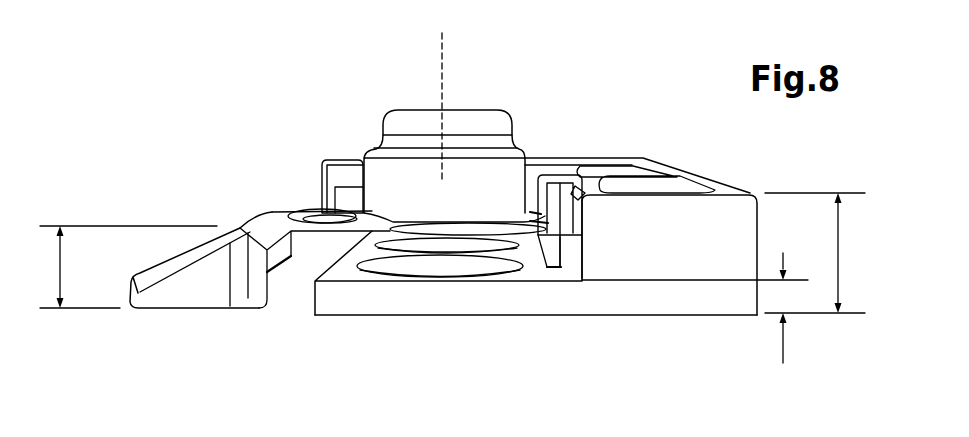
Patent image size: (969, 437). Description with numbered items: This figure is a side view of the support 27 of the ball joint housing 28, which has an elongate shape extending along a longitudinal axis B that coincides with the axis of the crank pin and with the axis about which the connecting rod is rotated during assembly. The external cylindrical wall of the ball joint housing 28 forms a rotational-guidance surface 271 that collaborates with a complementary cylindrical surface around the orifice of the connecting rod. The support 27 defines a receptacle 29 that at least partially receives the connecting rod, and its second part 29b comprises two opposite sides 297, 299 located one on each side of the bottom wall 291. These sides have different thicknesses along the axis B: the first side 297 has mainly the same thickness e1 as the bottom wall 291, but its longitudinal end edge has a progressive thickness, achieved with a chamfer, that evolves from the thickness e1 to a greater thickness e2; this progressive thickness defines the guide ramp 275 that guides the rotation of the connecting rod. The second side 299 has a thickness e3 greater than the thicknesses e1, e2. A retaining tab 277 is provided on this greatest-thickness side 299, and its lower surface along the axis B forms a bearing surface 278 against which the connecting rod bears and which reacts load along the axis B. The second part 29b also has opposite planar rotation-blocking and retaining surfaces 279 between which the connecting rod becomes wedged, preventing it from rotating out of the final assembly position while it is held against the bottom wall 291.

The support 27 is at (206, 86).
The ball joint housing 28 is at (463, 120).
The receptacle 29 is at (294, 183).
The second part of the receptacle 29b is at (311, 326).
The rotational-guidance surface 271 is at (538, 155).
The guide ramp 275 is at (182, 248).
The retaining tab 277 is at (355, 177).
The bearing surface 278 is at (356, 188).
The rotation-blocking and retaining surfaces 279 is at (286, 283).
The bottom wall 291 is at (537, 259).
The first side 297 is at (247, 230).
The second side 299 is at (733, 188).
The longitudinal axis B is at (442, 76).
The first thickness e1 is at (703, 308).
The second thickness e2 is at (121, 267).
The third thickness e3 is at (821, 253).